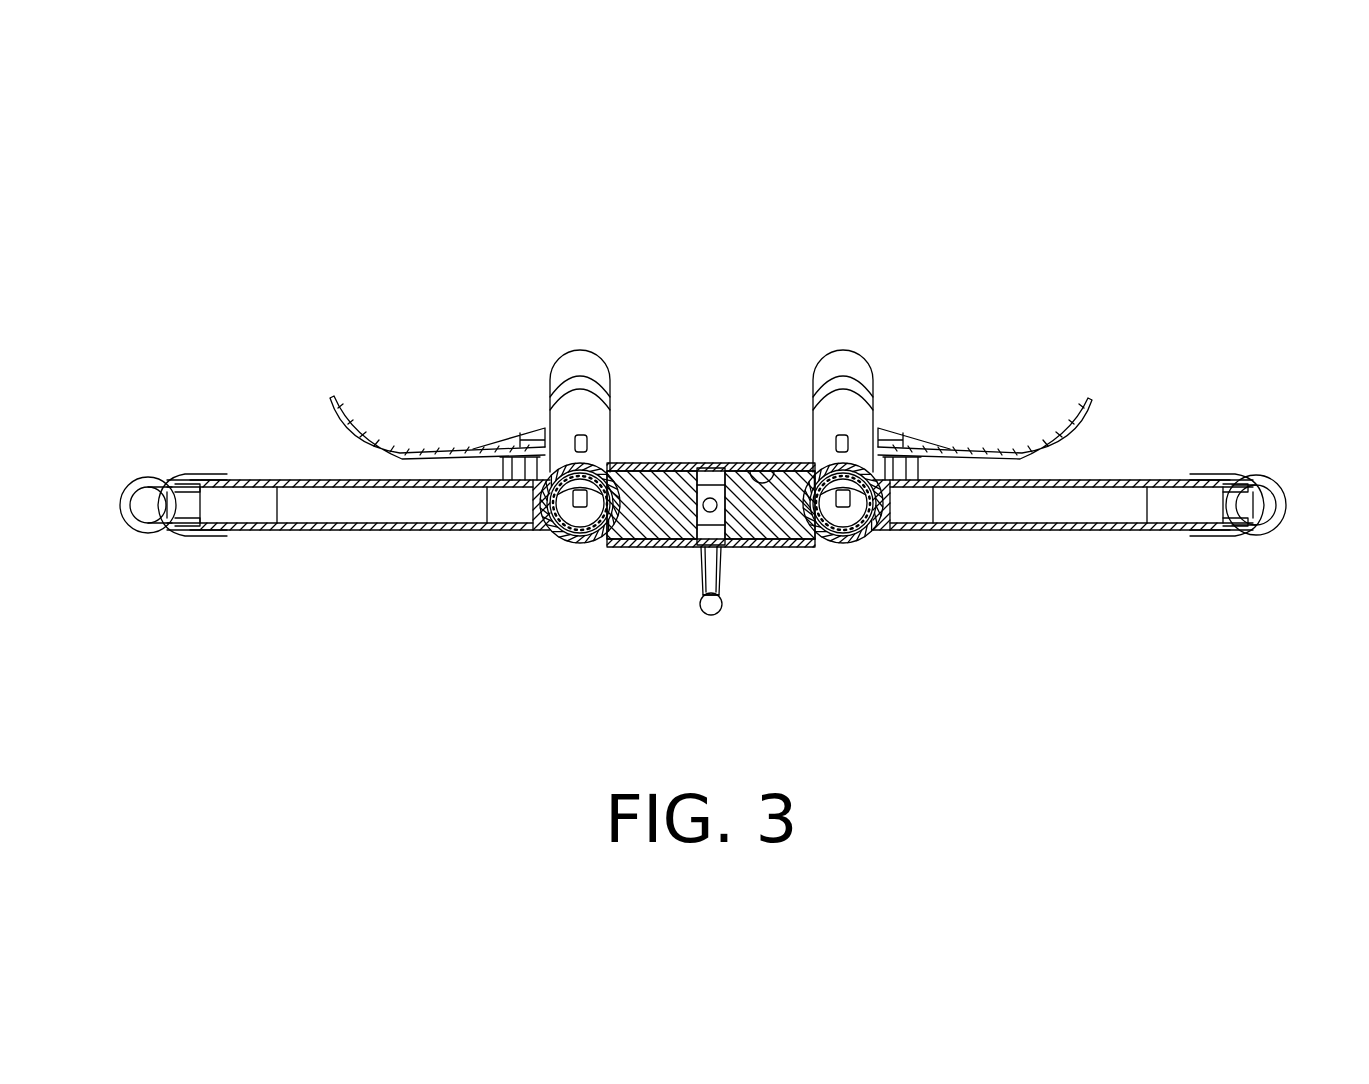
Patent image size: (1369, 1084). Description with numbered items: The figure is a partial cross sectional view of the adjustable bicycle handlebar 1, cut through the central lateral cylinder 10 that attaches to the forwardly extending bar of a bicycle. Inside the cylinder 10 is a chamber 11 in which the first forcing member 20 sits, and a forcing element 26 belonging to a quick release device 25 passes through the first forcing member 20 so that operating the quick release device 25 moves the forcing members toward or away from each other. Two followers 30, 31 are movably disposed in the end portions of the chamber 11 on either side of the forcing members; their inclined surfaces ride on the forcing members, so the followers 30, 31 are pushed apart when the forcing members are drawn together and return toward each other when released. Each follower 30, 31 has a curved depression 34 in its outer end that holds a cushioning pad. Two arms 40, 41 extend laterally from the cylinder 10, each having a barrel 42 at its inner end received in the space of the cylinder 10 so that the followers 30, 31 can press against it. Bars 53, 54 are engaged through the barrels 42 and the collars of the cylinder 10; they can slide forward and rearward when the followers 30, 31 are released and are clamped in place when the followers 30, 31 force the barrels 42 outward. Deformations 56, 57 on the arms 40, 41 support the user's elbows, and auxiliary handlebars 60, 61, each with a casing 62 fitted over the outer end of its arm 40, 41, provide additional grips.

The adjustable bicycle handlebar 1 is at (1003, 270).
The central lateral cylinder 10 is at (643, 462).
The chamber 11 is at (778, 462).
The first forcing member 20 is at (711, 480).
The quick release device 25 is at (722, 612).
The forcing element 26 is at (715, 510).
The follower 30 is at (783, 550).
The follower 31 is at (663, 548).
The curved depression 34 is at (622, 545).
The arm 40 is at (1070, 535).
The arm 41 is at (330, 535).
The barrel 42 is at (872, 543).
The bar 53 is at (845, 358).
The bar 54 is at (573, 358).
The deformation 56 is at (1057, 447).
The deformation 57 is at (381, 447).
The auxiliary handlebar 60 is at (1283, 510).
The auxiliary handlebar 61 is at (143, 480).
The casing 62 is at (1217, 538).